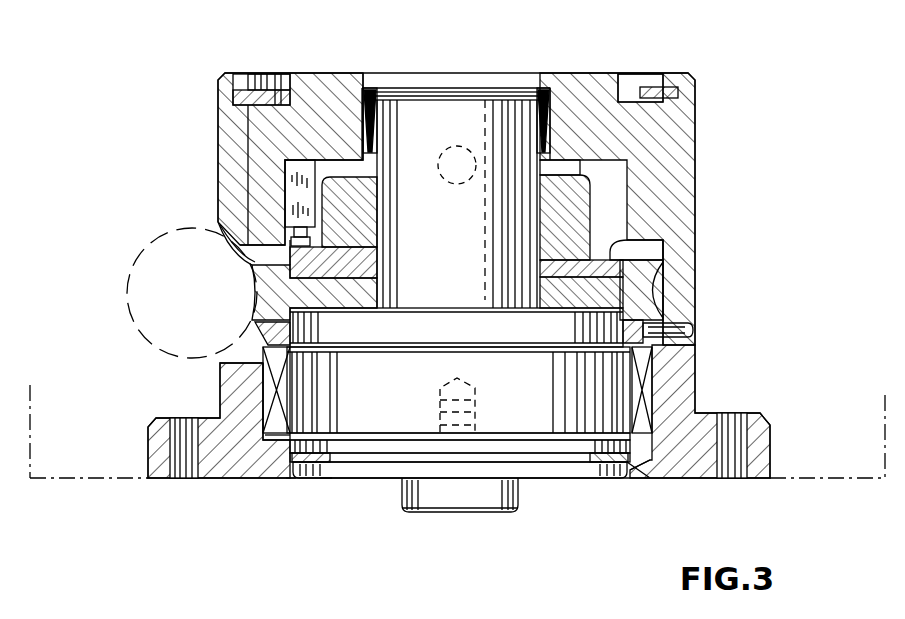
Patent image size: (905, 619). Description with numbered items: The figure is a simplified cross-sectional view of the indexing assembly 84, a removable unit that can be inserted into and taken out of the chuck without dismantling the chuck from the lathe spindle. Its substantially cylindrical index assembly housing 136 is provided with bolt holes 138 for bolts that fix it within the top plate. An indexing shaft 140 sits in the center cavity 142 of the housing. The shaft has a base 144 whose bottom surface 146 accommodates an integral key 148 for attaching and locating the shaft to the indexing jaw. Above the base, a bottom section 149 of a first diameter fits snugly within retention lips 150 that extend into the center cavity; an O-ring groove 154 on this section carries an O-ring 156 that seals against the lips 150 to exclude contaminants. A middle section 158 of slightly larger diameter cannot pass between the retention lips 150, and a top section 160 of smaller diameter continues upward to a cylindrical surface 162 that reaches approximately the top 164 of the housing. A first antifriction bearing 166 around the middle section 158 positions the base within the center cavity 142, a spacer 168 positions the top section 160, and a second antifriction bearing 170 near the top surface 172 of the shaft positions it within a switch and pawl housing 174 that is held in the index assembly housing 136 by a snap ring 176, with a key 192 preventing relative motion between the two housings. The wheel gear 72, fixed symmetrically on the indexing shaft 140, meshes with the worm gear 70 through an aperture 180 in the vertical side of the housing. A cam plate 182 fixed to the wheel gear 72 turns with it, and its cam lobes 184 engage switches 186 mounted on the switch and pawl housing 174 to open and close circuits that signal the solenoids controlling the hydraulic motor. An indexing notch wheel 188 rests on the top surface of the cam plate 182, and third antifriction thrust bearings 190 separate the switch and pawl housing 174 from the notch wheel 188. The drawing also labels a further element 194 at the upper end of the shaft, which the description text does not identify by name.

The worm gear 70 is at (132, 319).
The wheel gear 72 is at (263, 291).
The indexing assembly 84 is at (712, 486).
The index assembly housing 136 is at (698, 120).
The bolt holes 138 is at (735, 423).
The indexing shaft 140 is at (325, 490).
The center cavity 142 is at (289, 490).
The base 144 is at (560, 478).
The bottom surface 146 is at (528, 480).
The integral key 148 is at (452, 500).
The bottom section 149 is at (373, 468).
The retention lips 150 is at (282, 468).
The O-ring groove 154 is at (600, 470).
The O-ring 156 is at (630, 470).
The middle section 158 is at (388, 401).
The top section 160 is at (440, 336).
The cylindrical surface 162 is at (440, 236).
The top of the index assembly housing 164 is at (553, 90).
The first antifriction bearing 166 is at (272, 391).
The spacer 168 is at (262, 336).
The second antifriction bearing 170 is at (356, 105).
The top surface 172 is at (502, 110).
The switch and pawl housing 174 is at (258, 154).
The snap ring 176 is at (236, 98).
The aperture 180 is at (208, 221).
The cam plate 182 is at (612, 256).
The cam lobes 184 is at (386, 241).
The switches 186 is at (296, 190).
The indexing notch wheel 188 is at (584, 178).
The third antifriction thrust bearings 190 is at (578, 166).
The key 192 is at (448, 110).
The cap 194 is at (405, 110).